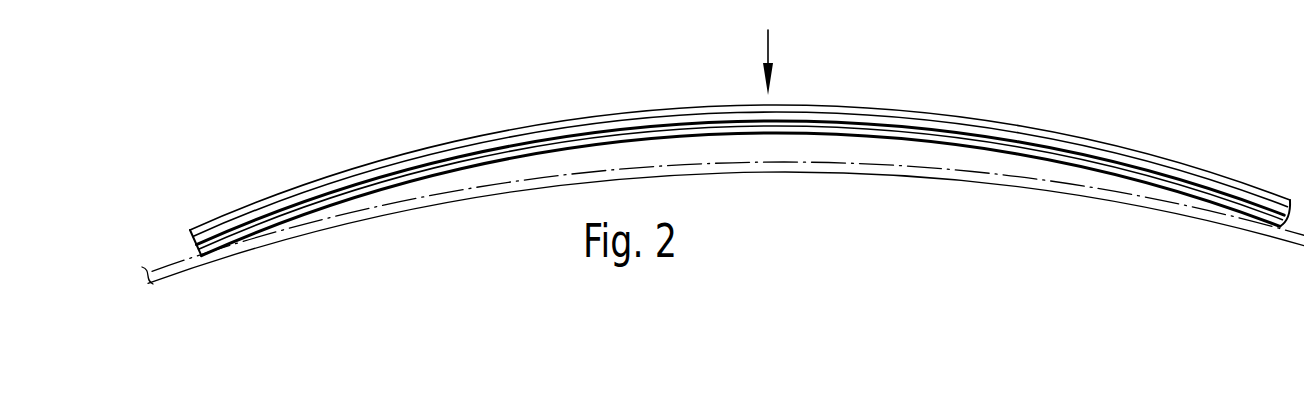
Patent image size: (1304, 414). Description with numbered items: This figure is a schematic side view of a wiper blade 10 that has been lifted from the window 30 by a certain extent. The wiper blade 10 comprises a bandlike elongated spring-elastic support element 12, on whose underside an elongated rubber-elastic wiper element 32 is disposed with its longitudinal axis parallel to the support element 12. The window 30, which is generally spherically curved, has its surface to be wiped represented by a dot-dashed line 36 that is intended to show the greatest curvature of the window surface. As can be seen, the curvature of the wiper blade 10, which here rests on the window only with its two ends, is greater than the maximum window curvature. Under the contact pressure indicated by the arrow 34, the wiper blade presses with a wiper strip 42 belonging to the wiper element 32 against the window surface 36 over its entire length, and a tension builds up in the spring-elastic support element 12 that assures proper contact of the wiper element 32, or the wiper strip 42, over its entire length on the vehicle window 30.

The wiper blade 10 is at (740, 150).
The spring-elastic support element 12 is at (1073, 134).
The window 30 is at (1185, 220).
The wiper element 32 is at (996, 152).
The arrow 34 is at (769, 53).
The dot-dashed line 36 is at (1087, 190).
The wiper strip 42 is at (903, 139).